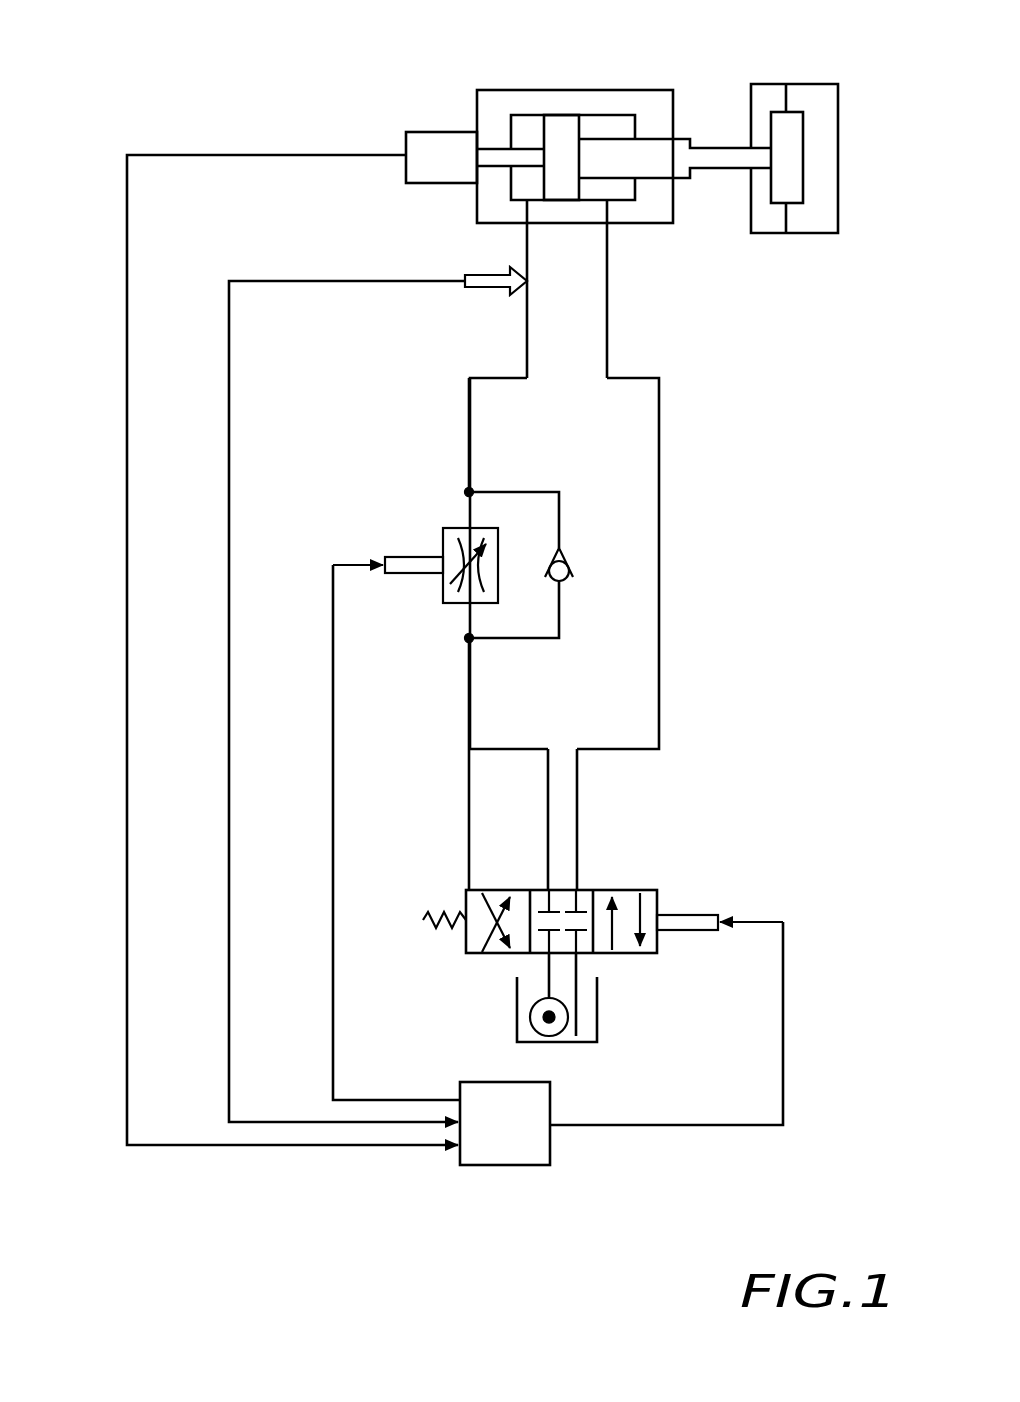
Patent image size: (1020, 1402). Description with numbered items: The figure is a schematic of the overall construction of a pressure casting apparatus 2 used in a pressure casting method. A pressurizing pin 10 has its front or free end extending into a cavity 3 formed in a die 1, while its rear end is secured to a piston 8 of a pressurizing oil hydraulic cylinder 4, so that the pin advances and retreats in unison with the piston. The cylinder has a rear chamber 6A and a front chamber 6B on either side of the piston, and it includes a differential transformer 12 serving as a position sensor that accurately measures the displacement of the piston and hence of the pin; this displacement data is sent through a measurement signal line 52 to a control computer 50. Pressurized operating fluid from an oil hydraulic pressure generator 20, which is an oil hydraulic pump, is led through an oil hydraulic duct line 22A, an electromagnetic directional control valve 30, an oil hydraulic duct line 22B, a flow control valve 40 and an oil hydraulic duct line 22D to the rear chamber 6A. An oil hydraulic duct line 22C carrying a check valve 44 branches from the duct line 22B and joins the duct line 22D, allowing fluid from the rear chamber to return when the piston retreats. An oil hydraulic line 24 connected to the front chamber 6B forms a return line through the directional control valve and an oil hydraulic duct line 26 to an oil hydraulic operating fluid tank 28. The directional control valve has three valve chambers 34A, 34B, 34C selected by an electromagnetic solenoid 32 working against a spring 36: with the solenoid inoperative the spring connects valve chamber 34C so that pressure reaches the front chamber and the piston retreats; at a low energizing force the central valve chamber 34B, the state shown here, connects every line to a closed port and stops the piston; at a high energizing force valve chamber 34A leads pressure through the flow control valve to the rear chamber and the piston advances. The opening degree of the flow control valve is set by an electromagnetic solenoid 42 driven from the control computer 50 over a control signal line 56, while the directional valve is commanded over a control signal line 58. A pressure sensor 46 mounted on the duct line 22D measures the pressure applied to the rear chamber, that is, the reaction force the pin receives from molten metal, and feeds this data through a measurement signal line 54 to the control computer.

The die 1 is at (840, 130).
The pressure casting apparatus 2 is at (188, 103).
The cavity 3 is at (788, 177).
The pressurizing oil hydraulic cylinder 4 is at (651, 106).
The rear chamber 6A is at (530, 128).
The front chamber 6B is at (615, 188).
The piston 8 is at (562, 125).
The pressurizing pin 10 is at (733, 158).
The differential transformer 12 is at (425, 130).
The oil hydraulic pressure generator 20 is at (530, 1013).
The oil hydraulic duct line 22A is at (540, 977).
The oil hydraulic duct line 22B is at (467, 690).
The oil hydraulic duct line 22C is at (523, 643).
The oil hydraulic duct line 22D is at (488, 398).
The oil hydraulic line 24 is at (660, 410).
The oil hydraulic duct line 26 is at (578, 965).
The oil hydraulic operating fluid tank 28 is at (602, 1010).
The electromagnetic directional control valve 30 is at (698, 804).
The electromagnetic solenoid 32 is at (707, 913).
The valve chamber 34A is at (650, 892).
The valve chamber 34B is at (582, 880).
The valve chamber 34C is at (475, 885).
The spring 36 is at (423, 920).
The flow control valve 40 is at (455, 525).
The electromagnetic solenoid 42 is at (403, 557).
The check valve 44 is at (572, 567).
The pressure sensor 46 is at (483, 277).
The control computer 50 is at (505, 1165).
The measurement signal line 52 is at (125, 520).
The measurement signal line 54 is at (229, 870).
The control signal line 56 is at (333, 675).
The control signal line 58 is at (783, 1028).